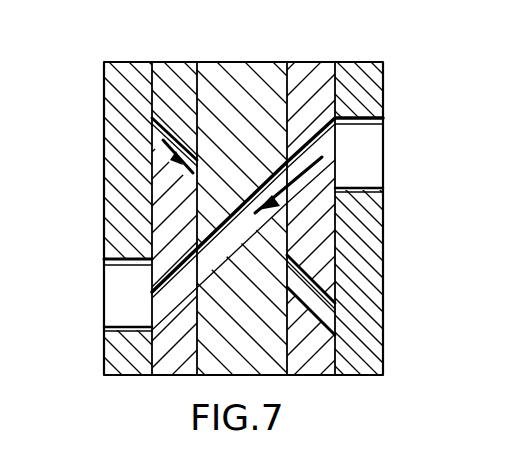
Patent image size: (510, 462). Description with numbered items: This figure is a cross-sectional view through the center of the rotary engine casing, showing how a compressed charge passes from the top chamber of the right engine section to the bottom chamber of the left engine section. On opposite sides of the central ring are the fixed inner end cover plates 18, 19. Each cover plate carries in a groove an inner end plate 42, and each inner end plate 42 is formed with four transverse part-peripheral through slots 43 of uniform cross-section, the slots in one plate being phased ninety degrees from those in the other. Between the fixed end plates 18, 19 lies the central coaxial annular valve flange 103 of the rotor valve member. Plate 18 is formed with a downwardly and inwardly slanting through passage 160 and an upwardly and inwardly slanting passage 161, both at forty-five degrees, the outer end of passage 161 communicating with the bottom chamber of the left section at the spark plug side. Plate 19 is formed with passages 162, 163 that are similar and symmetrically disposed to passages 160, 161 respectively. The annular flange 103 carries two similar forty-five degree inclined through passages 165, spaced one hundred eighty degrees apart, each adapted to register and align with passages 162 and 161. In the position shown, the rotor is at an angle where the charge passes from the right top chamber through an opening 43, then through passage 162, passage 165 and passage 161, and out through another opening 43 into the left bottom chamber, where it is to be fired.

The inner end cover plate 18 is at (165, 63).
The inner end cover plate 19 is at (313, 62).
The inner end plate 42 is at (105, 107).
The slot 43 is at (116, 305).
The annular valve flange 103 is at (254, 74).
The through passage 160 is at (170, 130).
The inclined passage 161 is at (165, 303).
The passage 162 is at (323, 148).
The passage 163 is at (323, 303).
The inclined through passage 165 is at (253, 227).